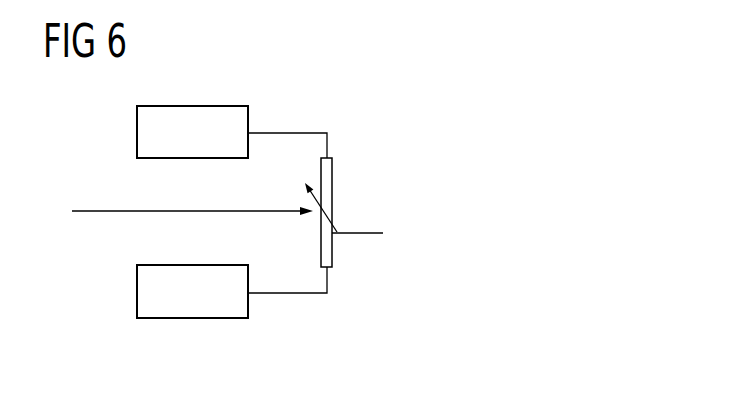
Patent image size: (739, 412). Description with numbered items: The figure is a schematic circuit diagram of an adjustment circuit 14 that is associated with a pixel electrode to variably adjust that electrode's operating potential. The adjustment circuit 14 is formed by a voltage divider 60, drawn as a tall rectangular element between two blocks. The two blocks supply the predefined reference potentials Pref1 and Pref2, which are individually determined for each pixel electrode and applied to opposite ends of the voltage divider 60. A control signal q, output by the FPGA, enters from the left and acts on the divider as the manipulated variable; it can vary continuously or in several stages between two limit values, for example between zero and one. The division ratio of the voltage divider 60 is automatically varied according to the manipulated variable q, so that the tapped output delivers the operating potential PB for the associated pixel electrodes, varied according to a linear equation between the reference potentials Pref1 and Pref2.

The adjustment circuit 14 is at (234, 212).
The voltage divider 60 is at (333, 176).
The first reference potential Pref1 is at (193, 106).
The second reference potential Pref2 is at (192, 318).
The operating potential PB is at (359, 233).
The control signal q is at (98, 211).